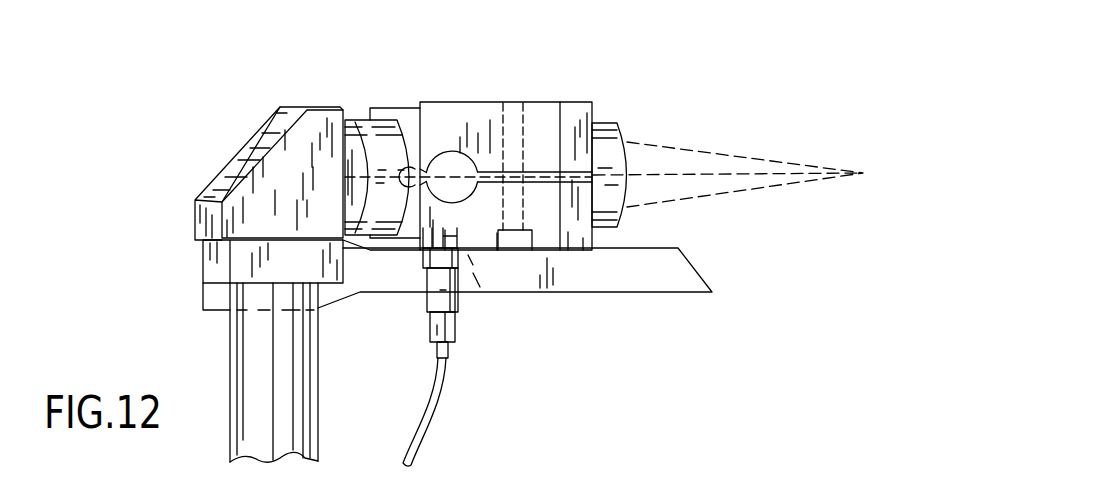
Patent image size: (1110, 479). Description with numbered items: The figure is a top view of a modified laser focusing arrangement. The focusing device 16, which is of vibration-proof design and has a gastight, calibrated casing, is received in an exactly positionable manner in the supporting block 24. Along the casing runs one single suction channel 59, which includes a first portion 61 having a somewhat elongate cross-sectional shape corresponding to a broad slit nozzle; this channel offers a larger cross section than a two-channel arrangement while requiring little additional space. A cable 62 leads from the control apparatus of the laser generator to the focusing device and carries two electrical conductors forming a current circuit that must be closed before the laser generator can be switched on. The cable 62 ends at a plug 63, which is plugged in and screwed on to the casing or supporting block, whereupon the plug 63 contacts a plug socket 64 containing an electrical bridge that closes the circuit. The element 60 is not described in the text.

The focusing device 16 is at (355, 107).
The supporting block 24 is at (493, 93).
The suction channel 59 is at (527, 303).
The support post block 60 is at (222, 300).
The first portion 61 is at (663, 277).
The cable 62 is at (423, 427).
The plug 63 is at (433, 302).
The plug socket 64 is at (462, 250).